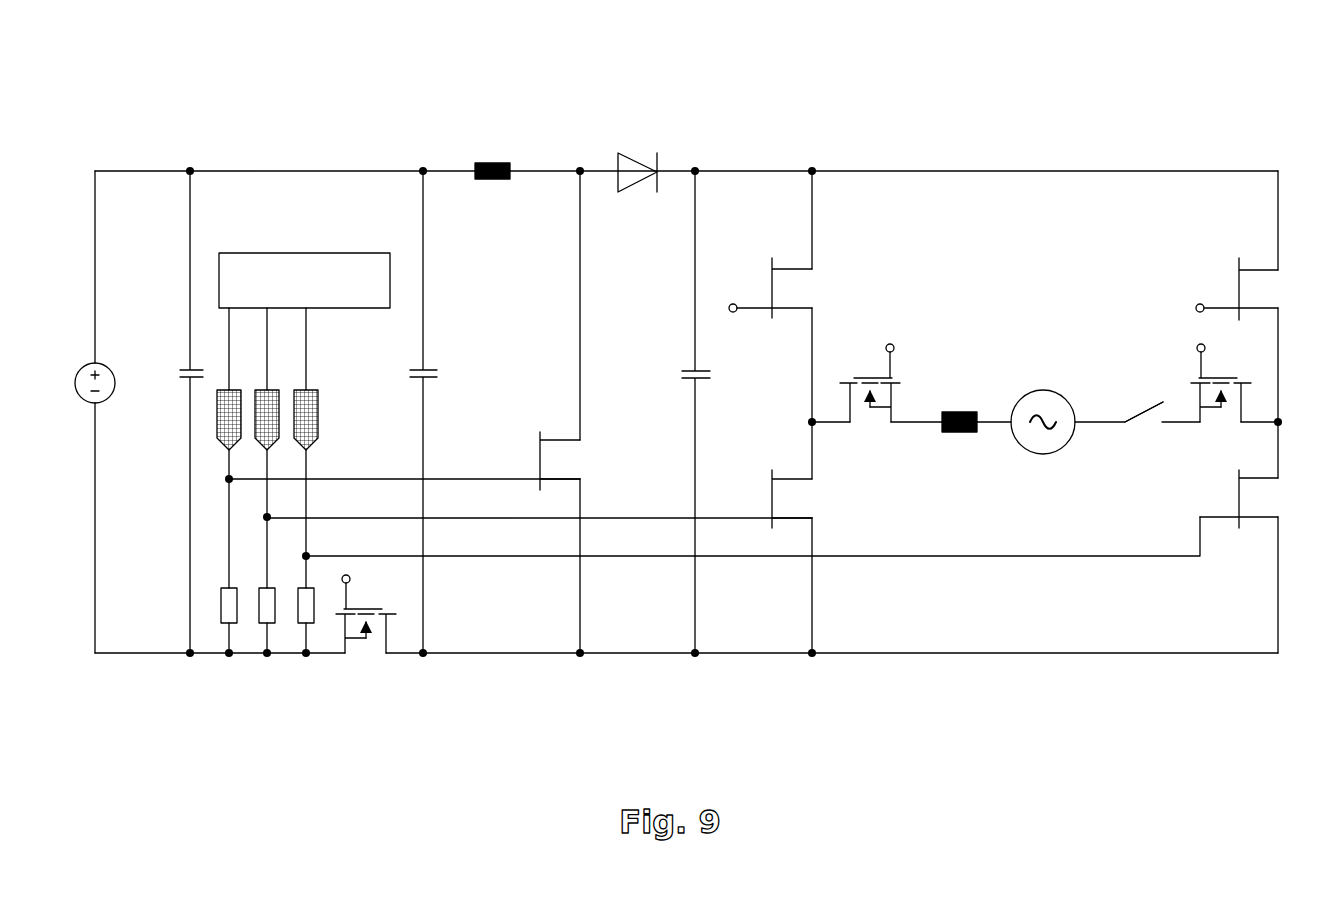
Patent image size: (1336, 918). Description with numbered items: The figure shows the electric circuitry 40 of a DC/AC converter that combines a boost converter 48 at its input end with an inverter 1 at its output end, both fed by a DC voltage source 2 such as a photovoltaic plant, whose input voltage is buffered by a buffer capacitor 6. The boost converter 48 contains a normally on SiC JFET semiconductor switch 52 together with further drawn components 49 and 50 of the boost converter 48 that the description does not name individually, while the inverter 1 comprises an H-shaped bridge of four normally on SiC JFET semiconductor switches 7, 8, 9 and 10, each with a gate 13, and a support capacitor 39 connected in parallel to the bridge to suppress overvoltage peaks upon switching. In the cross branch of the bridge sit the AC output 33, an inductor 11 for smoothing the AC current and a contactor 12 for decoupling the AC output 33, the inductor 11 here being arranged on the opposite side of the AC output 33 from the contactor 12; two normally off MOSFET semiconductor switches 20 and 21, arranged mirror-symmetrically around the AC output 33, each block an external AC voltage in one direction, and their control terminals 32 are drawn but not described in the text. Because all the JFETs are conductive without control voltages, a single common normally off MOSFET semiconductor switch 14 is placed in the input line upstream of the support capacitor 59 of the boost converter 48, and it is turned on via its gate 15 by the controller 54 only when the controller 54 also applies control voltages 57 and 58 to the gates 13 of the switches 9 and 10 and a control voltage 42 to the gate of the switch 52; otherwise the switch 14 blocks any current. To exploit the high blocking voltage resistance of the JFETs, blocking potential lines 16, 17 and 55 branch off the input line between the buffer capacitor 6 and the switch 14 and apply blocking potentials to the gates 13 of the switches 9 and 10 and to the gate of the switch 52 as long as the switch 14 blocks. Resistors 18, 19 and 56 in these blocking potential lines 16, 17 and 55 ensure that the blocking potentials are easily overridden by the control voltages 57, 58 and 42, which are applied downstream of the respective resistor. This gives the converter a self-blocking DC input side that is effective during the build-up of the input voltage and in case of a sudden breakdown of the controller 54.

The inverter 1 is at (984, 676).
The DC voltage source 2 is at (85, 403).
The buffer capacitor 6 is at (181, 387).
The semiconductor switch 7 is at (795, 290).
The semiconductor switch 8 is at (1263, 291).
The semiconductor switch 9 is at (815, 502).
The semiconductor switch 10 is at (1284, 500).
The inductor 11 is at (953, 433).
The contactor 12 is at (1141, 434).
The gates 13 is at (517, 473).
The normally off semiconductor switch 14 is at (363, 656).
The gate 15 is at (350, 590).
The blocking potential line 16 is at (487, 521).
The blocking potential line 17 is at (517, 558).
The resistor 18 is at (266, 612).
The resistor 19 is at (304, 612).
The semiconductor switch 20 is at (870, 429).
The semiconductor switch 21 is at (1224, 423).
The control terminal 32 is at (893, 360).
The AC output 33 is at (1047, 455).
The support capacitor 39 is at (703, 365).
The electric circuitry 40 is at (1013, 142).
The control voltage 42 is at (227, 407).
The boost converter 48 is at (608, 144).
The resistor 49 is at (492, 158).
The diode cathode 50 is at (645, 150).
The semiconductor switch 52 is at (578, 462).
The controller 54 is at (313, 253).
The blocking potential line 55 is at (394, 483).
The resistor 56 is at (228, 612).
The control voltage 57 is at (272, 438).
The control voltage 58 is at (307, 438).
The support capacitor 59 is at (412, 362).